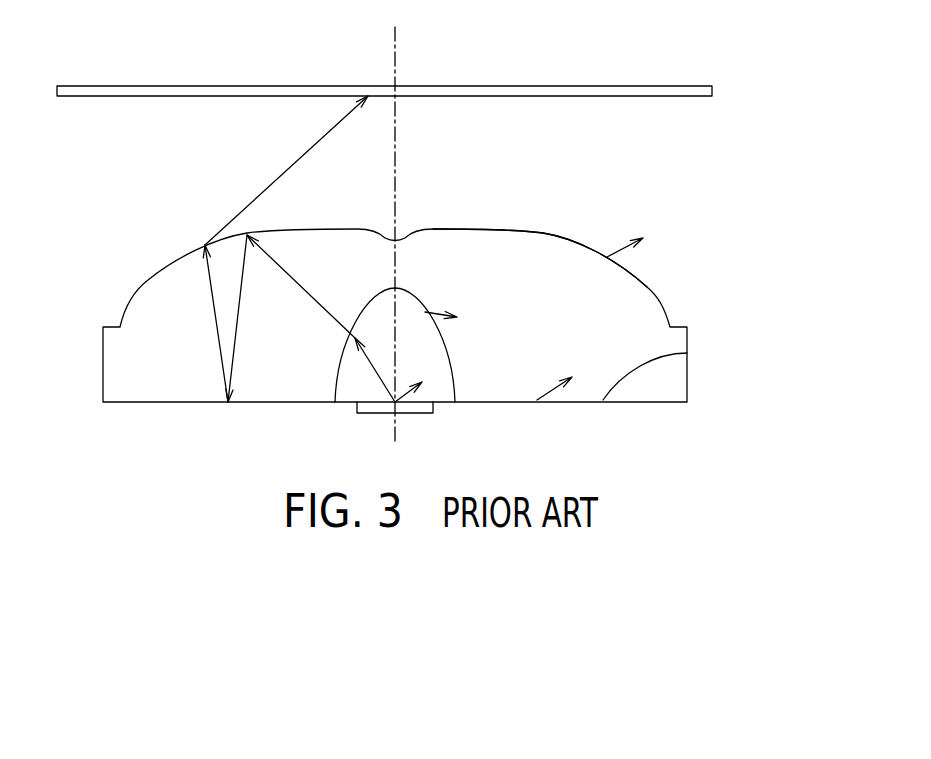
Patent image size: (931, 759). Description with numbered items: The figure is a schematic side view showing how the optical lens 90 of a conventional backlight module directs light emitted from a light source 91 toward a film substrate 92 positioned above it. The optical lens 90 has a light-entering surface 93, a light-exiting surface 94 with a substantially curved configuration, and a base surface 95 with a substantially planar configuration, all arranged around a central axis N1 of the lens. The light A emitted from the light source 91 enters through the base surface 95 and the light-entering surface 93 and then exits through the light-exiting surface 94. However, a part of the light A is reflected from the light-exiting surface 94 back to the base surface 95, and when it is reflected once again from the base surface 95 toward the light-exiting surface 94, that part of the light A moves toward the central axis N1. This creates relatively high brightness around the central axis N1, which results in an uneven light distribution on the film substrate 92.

The optical lens 90 is at (628, 308).
The light source 91 is at (418, 405).
The film substrate 92 is at (143, 90).
The light-entering surface 93 is at (407, 288).
The light-exiting surface 94 is at (542, 235).
The base surface 95 is at (687, 353).
The central axis N1 is at (395, 43).
The light A is at (260, 193).